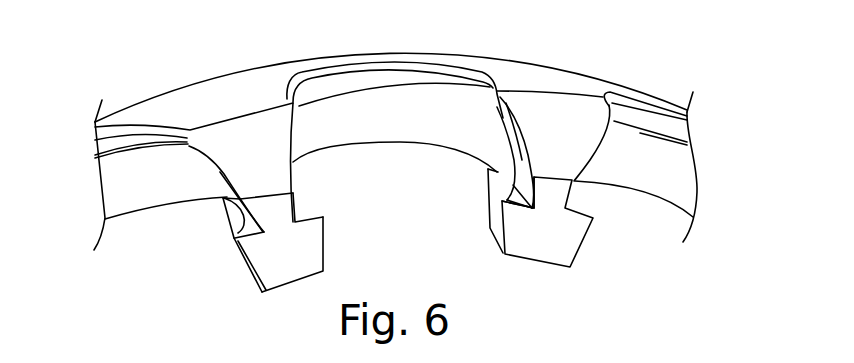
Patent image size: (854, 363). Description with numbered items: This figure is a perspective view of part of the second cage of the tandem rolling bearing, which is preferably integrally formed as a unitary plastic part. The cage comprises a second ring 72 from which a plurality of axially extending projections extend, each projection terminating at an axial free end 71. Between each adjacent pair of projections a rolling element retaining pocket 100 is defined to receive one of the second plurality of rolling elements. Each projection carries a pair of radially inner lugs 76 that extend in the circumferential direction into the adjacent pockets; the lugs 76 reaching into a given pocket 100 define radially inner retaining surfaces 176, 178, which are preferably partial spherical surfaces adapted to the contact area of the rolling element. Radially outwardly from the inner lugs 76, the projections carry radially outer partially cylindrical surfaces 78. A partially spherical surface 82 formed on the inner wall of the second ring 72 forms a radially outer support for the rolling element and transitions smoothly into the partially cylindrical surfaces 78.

The rolling element retaining pocket 100 is at (367, 163).
The second ring 72 is at (578, 89).
The radially outer partially cylindrical surface 78 is at (520, 162).
The partially spherical surface 82 is at (401, 118).
The radially inner lug 76 is at (254, 254).
The radially inner retaining surface 176 is at (297, 210).
The radially inner retaining surface 178 is at (493, 205).
The axial free end 71 is at (542, 247).